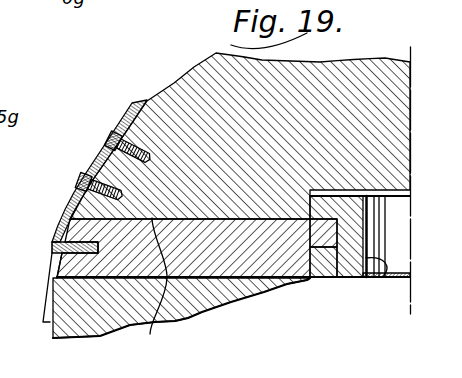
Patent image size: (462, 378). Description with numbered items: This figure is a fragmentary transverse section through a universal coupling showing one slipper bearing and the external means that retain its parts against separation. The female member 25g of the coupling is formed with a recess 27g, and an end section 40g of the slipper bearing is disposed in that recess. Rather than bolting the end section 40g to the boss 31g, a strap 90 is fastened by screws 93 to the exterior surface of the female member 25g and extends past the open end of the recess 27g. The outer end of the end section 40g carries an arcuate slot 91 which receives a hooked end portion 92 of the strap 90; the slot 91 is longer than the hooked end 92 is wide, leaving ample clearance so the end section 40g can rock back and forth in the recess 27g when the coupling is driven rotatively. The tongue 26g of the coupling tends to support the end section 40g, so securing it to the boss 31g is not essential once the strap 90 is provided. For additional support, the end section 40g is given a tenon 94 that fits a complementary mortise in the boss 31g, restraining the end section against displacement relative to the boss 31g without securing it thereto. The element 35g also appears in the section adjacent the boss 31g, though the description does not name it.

The female member 25g is at (196, 68).
The strap 90 is at (68, 206).
The hooked end portion 92 is at (51, 246).
The arcuate slot 91 is at (60, 263).
The screws 93 is at (122, 127).
The end section 40g is at (207, 265).
The tongue 26g is at (99, 333).
The recess 27g is at (154, 287).
The boss 31g is at (351, 272).
The tenon 94 is at (332, 254).
The vertical rod 35g is at (378, 277).